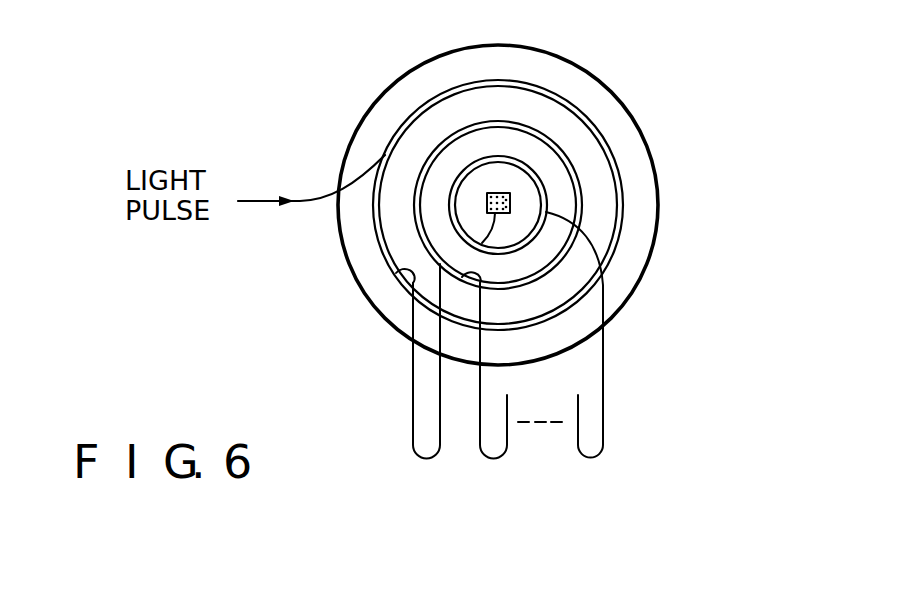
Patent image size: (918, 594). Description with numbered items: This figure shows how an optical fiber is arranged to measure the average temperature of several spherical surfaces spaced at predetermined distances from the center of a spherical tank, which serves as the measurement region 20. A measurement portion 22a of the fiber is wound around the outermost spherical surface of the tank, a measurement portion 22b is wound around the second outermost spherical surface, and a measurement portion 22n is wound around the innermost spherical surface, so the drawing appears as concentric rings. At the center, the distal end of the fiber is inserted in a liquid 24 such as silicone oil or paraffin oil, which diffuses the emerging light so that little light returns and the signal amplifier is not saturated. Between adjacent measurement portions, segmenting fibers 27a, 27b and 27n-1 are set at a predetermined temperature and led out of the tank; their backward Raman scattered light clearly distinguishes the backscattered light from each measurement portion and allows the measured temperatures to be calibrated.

The measurement region 20 is at (658, 186).
The measurement portion 22a is at (565, 98).
The measurement portion 22b is at (569, 158).
The measurement portion 22n is at (541, 205).
The liquid 24 is at (512, 199).
The segmenting fiber 27a is at (427, 453).
The segmenting fiber 27b is at (494, 453).
The segmenting fiber 27n-1 is at (590, 453).